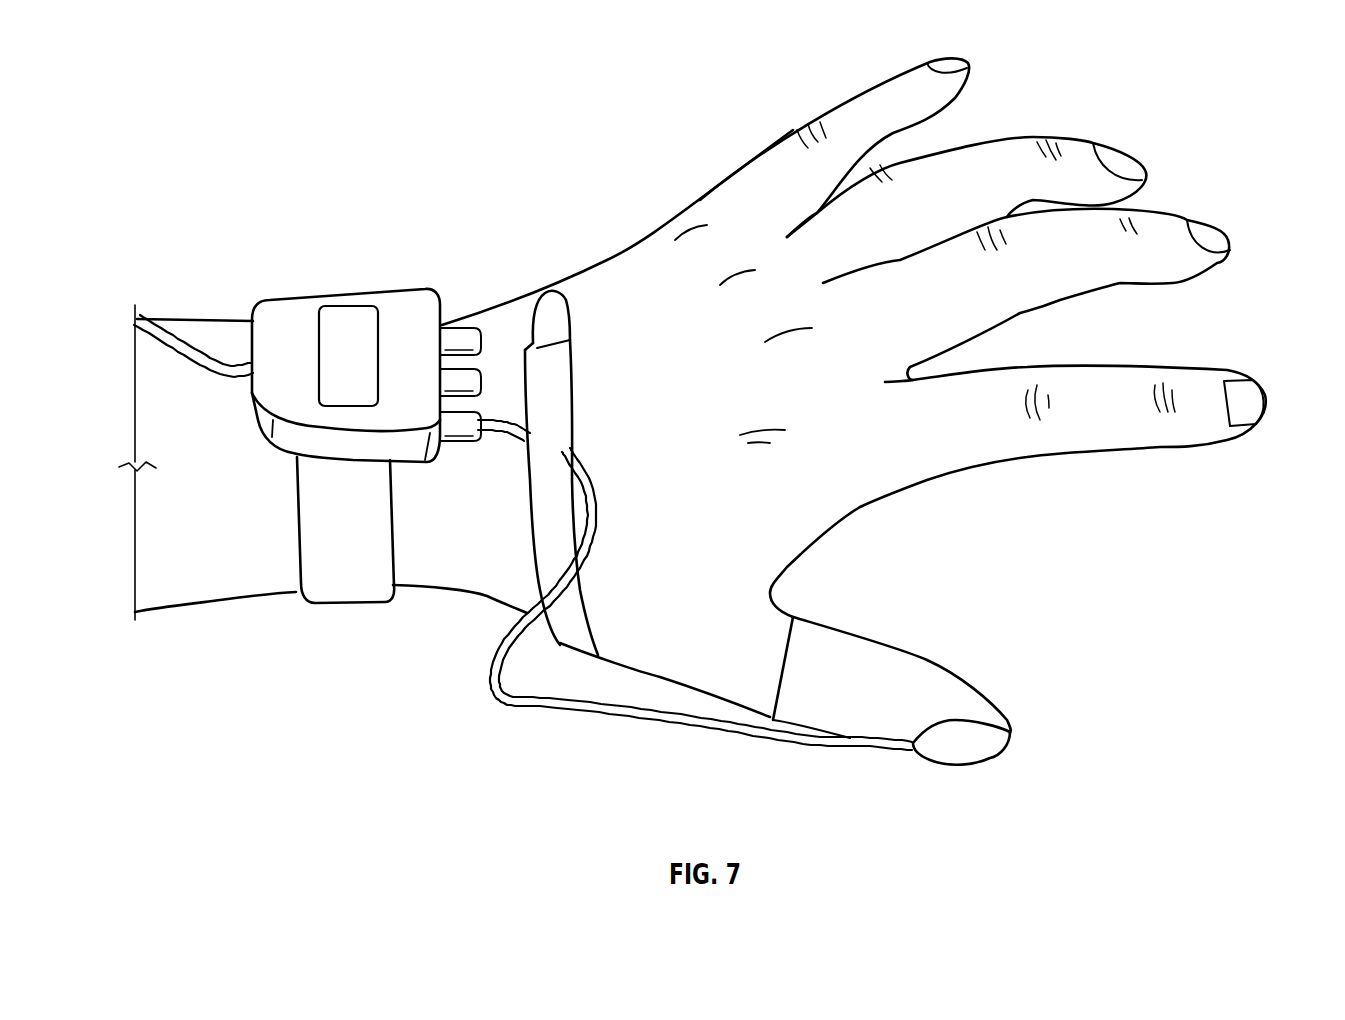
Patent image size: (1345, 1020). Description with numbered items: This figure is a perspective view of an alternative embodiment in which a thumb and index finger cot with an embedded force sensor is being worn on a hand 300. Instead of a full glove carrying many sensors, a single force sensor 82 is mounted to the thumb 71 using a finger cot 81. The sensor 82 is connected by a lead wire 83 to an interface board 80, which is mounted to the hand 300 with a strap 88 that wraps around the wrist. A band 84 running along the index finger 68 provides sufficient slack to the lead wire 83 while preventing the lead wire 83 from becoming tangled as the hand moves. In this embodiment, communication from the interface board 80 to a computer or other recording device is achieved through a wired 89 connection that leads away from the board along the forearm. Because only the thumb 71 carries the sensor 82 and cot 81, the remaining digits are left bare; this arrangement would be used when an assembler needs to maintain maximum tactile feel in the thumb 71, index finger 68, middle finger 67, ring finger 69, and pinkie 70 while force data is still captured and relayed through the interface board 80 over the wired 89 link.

The hand 300 is at (568, 194).
The pinkie 70 is at (970, 63).
The ring finger 69 is at (1147, 168).
The middle finger 67 is at (1228, 238).
The index finger 68 is at (1268, 400).
The thumb 71 is at (1013, 753).
The interface board 80 is at (368, 333).
The finger cot 81 is at (868, 702).
The force sensor 82 is at (990, 700).
The lead wire 83 is at (680, 727).
The band 84 is at (548, 322).
The strap 88 is at (347, 565).
The wired connection 89 is at (178, 340).